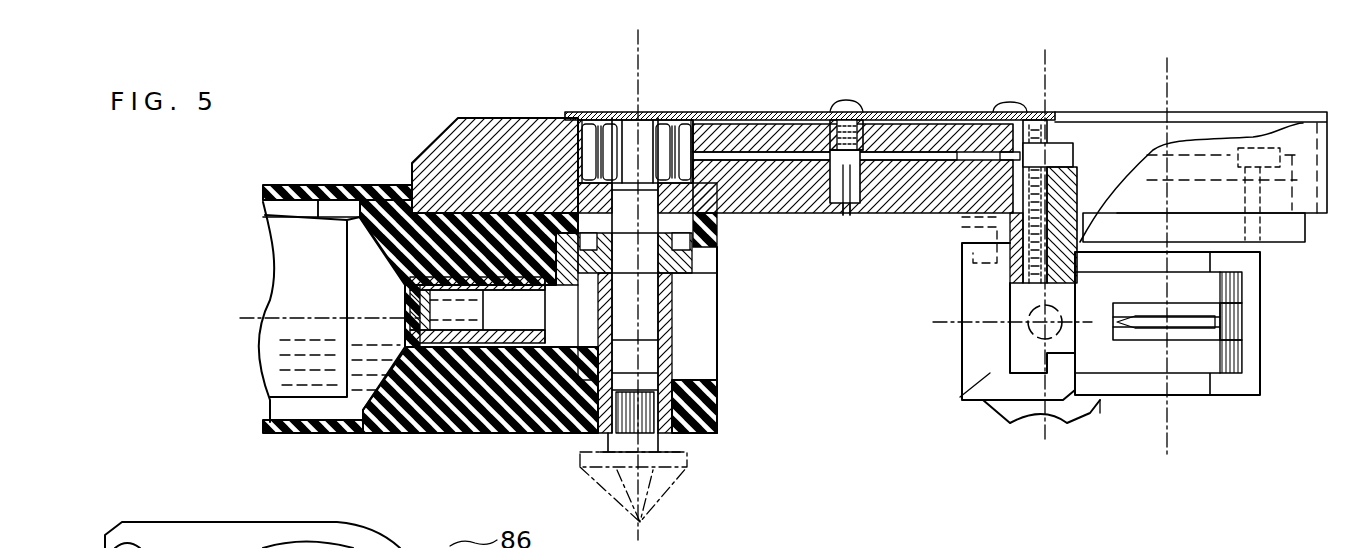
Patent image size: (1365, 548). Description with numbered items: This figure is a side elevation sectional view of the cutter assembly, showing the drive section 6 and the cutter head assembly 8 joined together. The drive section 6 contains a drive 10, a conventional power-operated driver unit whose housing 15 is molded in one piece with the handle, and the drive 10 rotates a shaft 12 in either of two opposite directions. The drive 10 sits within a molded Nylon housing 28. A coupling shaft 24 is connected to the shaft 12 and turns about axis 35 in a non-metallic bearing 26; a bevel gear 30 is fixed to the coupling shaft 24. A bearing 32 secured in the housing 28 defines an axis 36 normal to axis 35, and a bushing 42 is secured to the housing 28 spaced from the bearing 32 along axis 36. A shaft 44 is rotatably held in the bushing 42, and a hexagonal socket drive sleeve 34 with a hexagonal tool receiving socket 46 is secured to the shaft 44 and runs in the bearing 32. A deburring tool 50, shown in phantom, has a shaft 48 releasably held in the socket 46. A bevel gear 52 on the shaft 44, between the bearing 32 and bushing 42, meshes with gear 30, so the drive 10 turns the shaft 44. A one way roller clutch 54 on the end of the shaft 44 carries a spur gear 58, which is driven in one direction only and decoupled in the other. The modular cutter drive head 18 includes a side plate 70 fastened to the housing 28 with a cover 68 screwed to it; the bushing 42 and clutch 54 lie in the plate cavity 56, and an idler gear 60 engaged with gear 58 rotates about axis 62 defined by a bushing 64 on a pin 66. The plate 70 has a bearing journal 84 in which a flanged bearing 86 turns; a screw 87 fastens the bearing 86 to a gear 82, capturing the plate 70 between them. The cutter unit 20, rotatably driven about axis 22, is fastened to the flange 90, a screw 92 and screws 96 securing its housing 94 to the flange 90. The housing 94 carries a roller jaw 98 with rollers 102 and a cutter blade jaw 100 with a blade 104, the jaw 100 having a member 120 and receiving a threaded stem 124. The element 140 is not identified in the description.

The drive section 6 is at (361, 433).
The cutter head assembly 8 is at (516, 88).
The drive 10 is at (308, 372).
The shaft 12 is at (407, 281).
The housing 15 is at (320, 200).
The modular cutter drive head 18 is at (746, 95).
The cutter unit 20 is at (1038, 456).
The axis 22 is at (1165, 452).
The coupling shaft 24 is at (428, 312).
The bearing 26 is at (535, 322).
The housing 28 is at (544, 426).
The bevel gear 30 is at (510, 200).
The bearing 32 is at (720, 422).
The hexagonal socket drive sleeve 34 is at (672, 335).
The axis 35 is at (264, 345).
The axis 36 is at (644, 70).
The bushing 42 is at (720, 193).
The shaft 44 is at (673, 263).
The hexagonal tool receiving socket 46 is at (718, 407).
The shaft 48 is at (660, 442).
The deburring tool 50 is at (678, 484).
The bevel gear 52 is at (557, 198).
The one way roller clutch 54 is at (618, 147).
The cavity 56 is at (583, 148).
The spur gear 58 is at (688, 155).
The idler gear 60 is at (906, 150).
The axis 62 is at (843, 70).
The bushing 64 is at (870, 147).
The pin 66 is at (845, 180).
The cover 68 is at (985, 110).
The side plate 70 is at (803, 192).
The gear 82 is at (1057, 153).
The bearing journal 84 is at (1060, 153).
The flanged bearing 86 is at (1078, 240).
The screw 87 is at (1310, 112).
The flange 90 is at (966, 228).
The screw 92 is at (1057, 163).
The housing 94 is at (958, 398).
The screws 96 is at (960, 256).
The roller jaw 98 is at (1252, 272).
The cutter blade jaw 100 is at (1205, 360).
The rollers 102 is at (1215, 328).
The blade 104 is at (1243, 337).
The member 120 is at (962, 341).
The stem 124 is at (1058, 318).
The spring clip 140 is at (1100, 403).